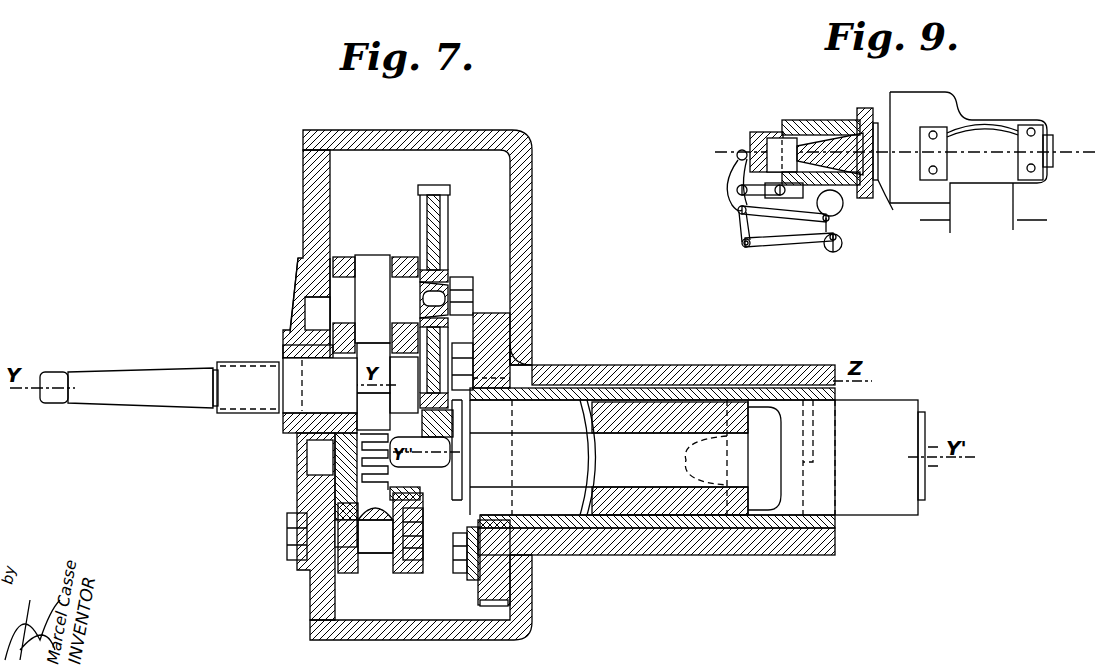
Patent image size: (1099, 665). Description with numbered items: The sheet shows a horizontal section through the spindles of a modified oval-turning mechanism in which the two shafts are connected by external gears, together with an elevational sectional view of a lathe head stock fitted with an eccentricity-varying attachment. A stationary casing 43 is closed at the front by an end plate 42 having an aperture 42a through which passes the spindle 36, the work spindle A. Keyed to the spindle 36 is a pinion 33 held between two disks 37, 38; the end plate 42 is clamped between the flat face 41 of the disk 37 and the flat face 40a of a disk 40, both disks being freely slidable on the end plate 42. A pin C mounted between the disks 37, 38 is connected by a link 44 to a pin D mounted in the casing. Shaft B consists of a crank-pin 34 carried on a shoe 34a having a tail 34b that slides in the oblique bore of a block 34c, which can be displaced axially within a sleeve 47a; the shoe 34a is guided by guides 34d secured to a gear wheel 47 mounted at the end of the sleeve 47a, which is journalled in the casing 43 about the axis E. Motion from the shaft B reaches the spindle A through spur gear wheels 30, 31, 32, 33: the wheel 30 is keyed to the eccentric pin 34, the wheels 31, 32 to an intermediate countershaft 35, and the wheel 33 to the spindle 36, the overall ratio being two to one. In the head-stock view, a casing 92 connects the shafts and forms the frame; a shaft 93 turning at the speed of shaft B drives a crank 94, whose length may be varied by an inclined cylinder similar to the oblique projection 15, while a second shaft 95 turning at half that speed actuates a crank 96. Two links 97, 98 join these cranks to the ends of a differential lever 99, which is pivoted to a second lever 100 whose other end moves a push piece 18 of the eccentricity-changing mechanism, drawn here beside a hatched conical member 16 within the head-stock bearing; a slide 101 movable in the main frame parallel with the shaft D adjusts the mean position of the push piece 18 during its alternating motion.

In FIG. 7, the stationary frame or casing 43 is at (372, 138).
In FIG. 7, the end plate 42 is at (312, 232).
In FIG. 7, the flat face of disk 37 41 is at (325, 277).
In FIG. 7, the flat face of disk 40 40a is at (312, 280).
In FIG. 7, the aperture 42a is at (300, 297).
In FIG. 7, the gear wheel 47 is at (495, 588).
In FIG. 7, the sleeve 47a is at (566, 385).
In FIG. 7, the block 34c is at (696, 500).
In FIG. 7, the projection or tail 34b is at (643, 472).
In FIG. 7, the axis E is at (602, 462).
In FIG. 7, the spur gear wheel 30 is at (480, 413).
In FIG. 7, the shoe 34a is at (480, 485).
In FIG. 7, the spur gear wheel 31 is at (447, 285).
In FIG. 7, the guides 34d is at (476, 320).
In FIG. 7, the intermediate shaft or countershaft 35 is at (350, 268).
In FIG. 7, the disk 38 is at (398, 330).
In FIG. 7, the spur gear wheel 32 is at (372, 299).
In FIG. 7, the pinion 33 is at (372, 426).
In FIG. 7, the shaft B is at (421, 447).
In FIG. 7, the crank-pin 34 is at (440, 452).
In FIG. 7, the spindle 36 is at (155, 380).
In FIG. 7, the spindle A is at (239, 373).
In FIG. 7, the disk 40 is at (287, 425).
In FIG. 7, the disk 37 is at (333, 460).
In FIG. 7, the link 44 is at (380, 540).
In FIG. 7, the pin C is at (374, 579).
In FIG. 9, the push piece 18 is at (754, 150).
In FIG. 9, the conical clutch member 16 is at (829, 146).
In FIG. 9, the pin / shaft D is at (872, 120).
In FIG. 9, the casing 92 is at (946, 104).
In FIG. 9, the oblique projection 15 is at (893, 210).
In FIG. 9, the shaft 93 is at (845, 212).
In FIG. 9, the second shaft 95 is at (842, 243).
In FIG. 9, the second lever 100 is at (740, 172).
In FIG. 9, the slide 101 is at (793, 193).
In FIG. 9, the link 97 is at (805, 224).
In FIG. 9, the link 98 is at (773, 245).
In FIG. 9, the differential lever 99 is at (744, 236).
In FIG. 9, the crank 96 is at (836, 252).
In FIG. 9, the crank 94 is at (826, 222).